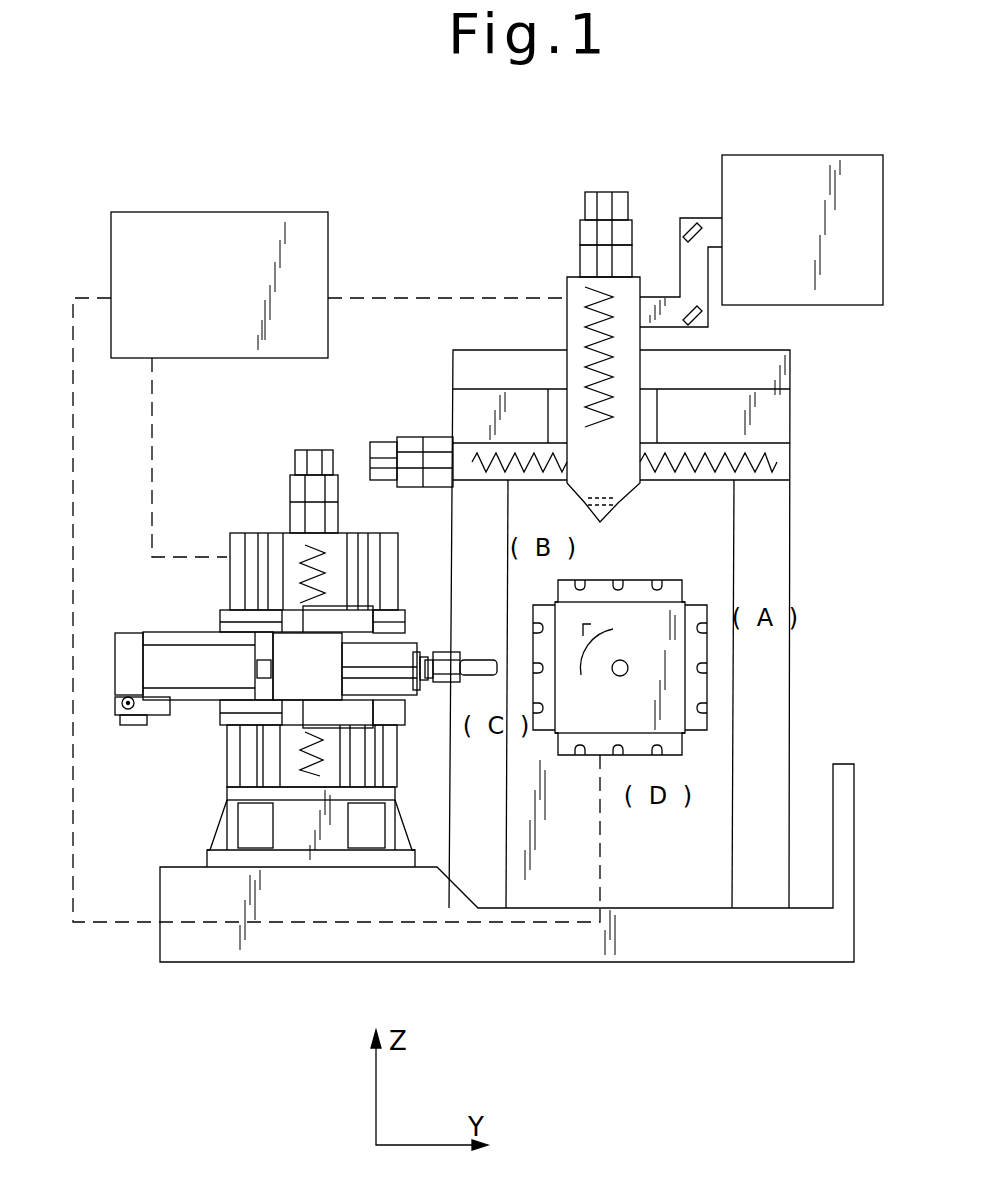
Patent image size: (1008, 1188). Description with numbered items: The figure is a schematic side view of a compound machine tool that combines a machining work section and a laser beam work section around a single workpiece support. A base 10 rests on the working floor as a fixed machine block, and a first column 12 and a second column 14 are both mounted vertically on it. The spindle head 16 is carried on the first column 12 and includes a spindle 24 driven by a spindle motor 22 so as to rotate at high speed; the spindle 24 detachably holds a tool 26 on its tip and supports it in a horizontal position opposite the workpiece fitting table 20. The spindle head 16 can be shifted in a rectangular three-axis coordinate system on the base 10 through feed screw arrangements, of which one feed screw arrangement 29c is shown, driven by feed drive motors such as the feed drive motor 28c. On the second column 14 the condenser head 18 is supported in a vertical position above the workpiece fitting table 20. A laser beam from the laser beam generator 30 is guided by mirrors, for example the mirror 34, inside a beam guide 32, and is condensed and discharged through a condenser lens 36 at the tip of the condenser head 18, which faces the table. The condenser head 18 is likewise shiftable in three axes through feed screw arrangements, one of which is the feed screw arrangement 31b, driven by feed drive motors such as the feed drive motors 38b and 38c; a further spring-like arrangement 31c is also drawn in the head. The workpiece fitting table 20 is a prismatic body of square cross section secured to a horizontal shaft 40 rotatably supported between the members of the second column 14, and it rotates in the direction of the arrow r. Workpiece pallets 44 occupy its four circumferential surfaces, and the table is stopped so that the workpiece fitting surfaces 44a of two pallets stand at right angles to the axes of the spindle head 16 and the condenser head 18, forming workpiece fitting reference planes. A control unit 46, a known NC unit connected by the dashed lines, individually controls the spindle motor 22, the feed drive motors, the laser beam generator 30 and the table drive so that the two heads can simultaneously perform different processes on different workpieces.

The base 10 is at (197, 948).
The first column 12 is at (227, 798).
The second column 14 is at (790, 547).
The spindle head 16 is at (168, 613).
The condenser head 18 is at (552, 287).
The workpiece fitting table 20 is at (600, 723).
The spindle motor 22 is at (118, 692).
The spindle 24 is at (288, 681).
The tool 26 is at (472, 658).
The feed drive motor 28c is at (298, 490).
The feed screw arrangement 29c is at (322, 560).
The laser beam generator 30 is at (766, 243).
The feed screw arrangement 31b is at (777, 462).
The spring 31c is at (607, 390).
The beam guide 32 is at (680, 268).
The mirror 34 is at (688, 222).
The condenser lens 36 is at (620, 503).
The feed drive motor 38b is at (423, 445).
The feed drive motor 38c is at (607, 192).
The horizontal shaft 40 is at (628, 668).
The workpiece pallet 44 is at (700, 648).
The workpiece fitting surface 44a is at (598, 582).
The control unit 46 is at (187, 300).